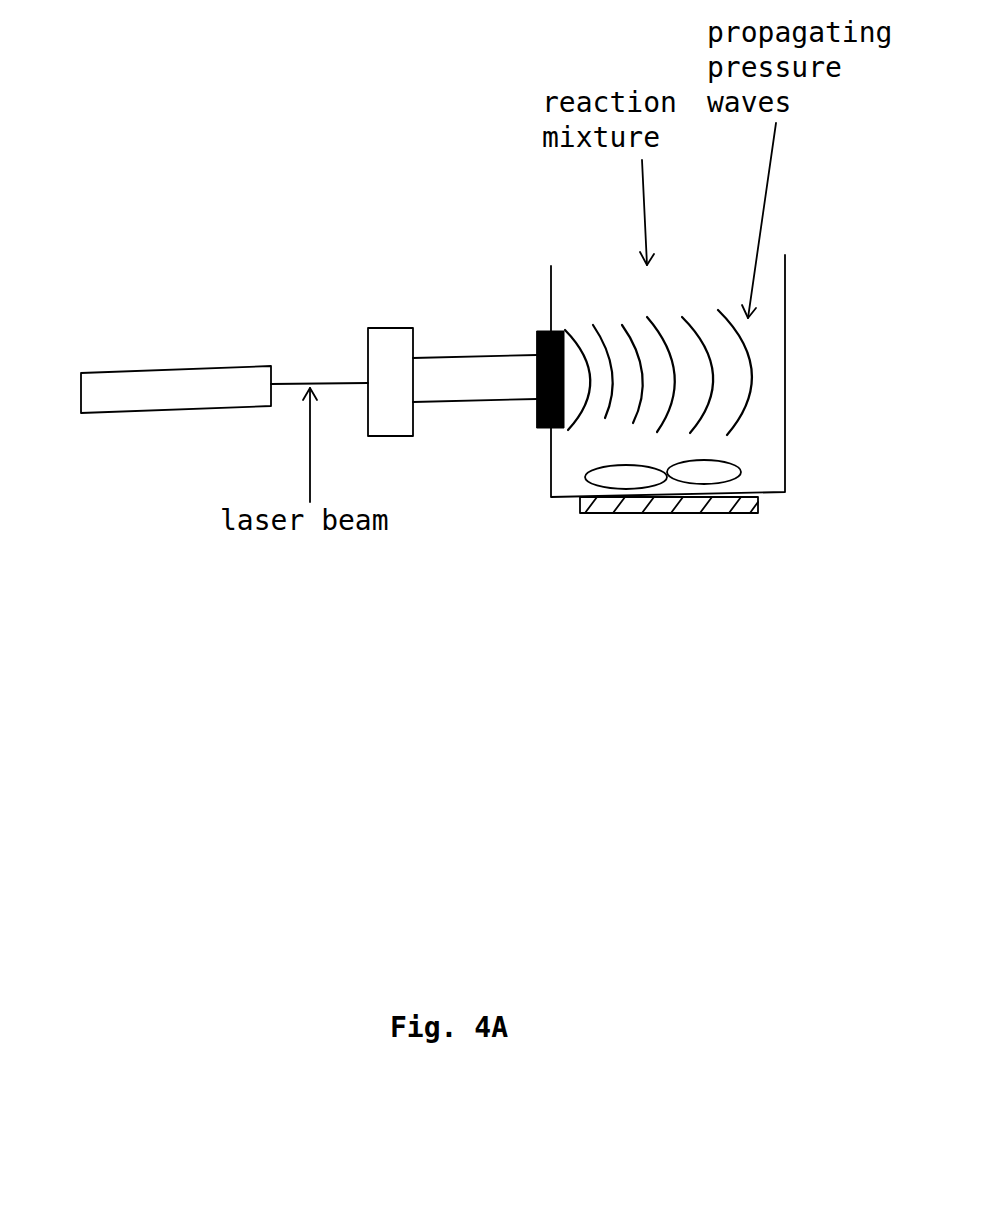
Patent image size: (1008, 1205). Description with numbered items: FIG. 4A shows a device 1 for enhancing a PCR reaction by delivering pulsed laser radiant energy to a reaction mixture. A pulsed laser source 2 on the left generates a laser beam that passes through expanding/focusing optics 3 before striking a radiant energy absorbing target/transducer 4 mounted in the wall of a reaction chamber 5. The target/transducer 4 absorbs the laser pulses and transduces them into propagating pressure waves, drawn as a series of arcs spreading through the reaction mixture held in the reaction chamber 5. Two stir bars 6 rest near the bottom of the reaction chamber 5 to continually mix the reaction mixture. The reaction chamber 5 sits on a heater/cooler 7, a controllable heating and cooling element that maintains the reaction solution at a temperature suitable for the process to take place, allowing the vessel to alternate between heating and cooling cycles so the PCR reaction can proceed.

The device 1 is at (462, 278).
The pulsed laser source 2 is at (173, 367).
The expanding/focusing optics 3 is at (383, 326).
The radiant energy absorbing target/transducer 4 is at (532, 413).
The reaction chamber 5 is at (778, 493).
The stir bars 6 is at (687, 485).
The heater/cooler 7 is at (615, 514).